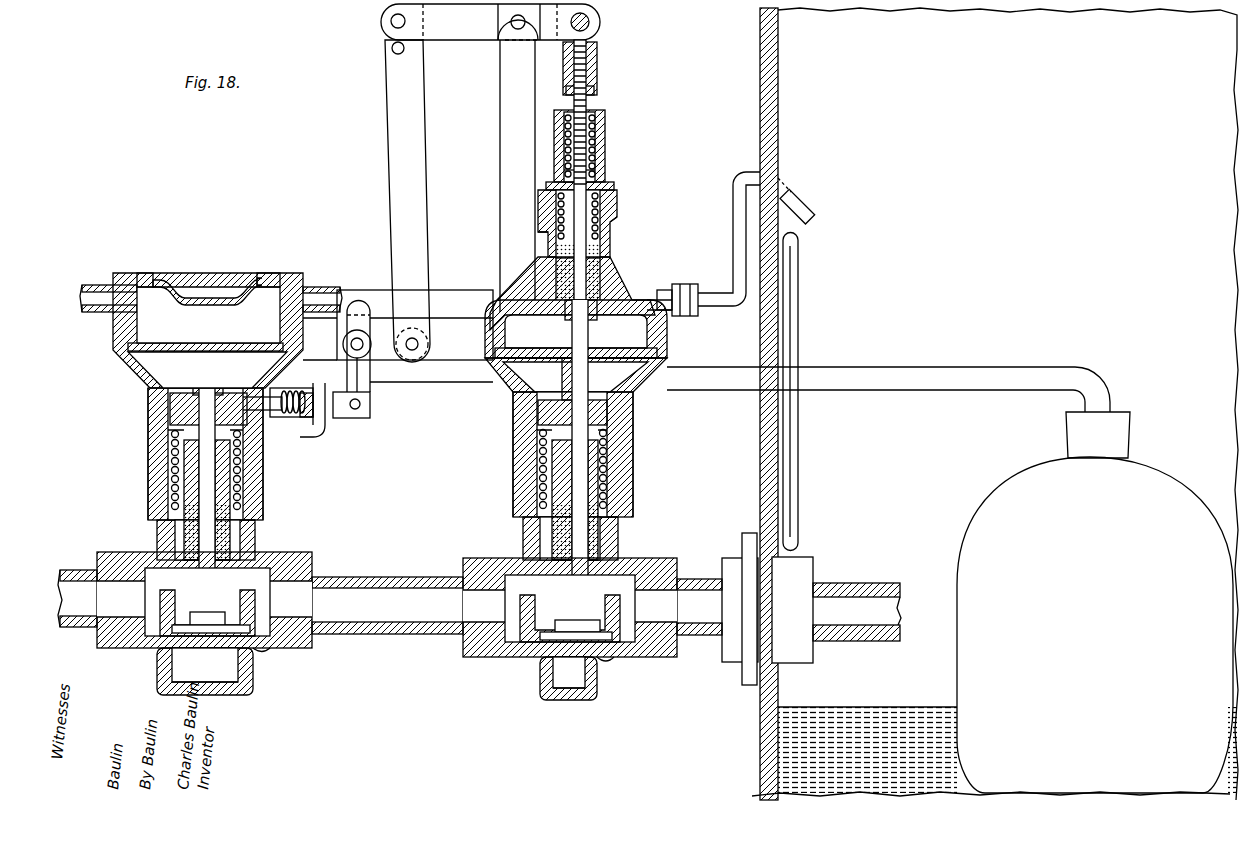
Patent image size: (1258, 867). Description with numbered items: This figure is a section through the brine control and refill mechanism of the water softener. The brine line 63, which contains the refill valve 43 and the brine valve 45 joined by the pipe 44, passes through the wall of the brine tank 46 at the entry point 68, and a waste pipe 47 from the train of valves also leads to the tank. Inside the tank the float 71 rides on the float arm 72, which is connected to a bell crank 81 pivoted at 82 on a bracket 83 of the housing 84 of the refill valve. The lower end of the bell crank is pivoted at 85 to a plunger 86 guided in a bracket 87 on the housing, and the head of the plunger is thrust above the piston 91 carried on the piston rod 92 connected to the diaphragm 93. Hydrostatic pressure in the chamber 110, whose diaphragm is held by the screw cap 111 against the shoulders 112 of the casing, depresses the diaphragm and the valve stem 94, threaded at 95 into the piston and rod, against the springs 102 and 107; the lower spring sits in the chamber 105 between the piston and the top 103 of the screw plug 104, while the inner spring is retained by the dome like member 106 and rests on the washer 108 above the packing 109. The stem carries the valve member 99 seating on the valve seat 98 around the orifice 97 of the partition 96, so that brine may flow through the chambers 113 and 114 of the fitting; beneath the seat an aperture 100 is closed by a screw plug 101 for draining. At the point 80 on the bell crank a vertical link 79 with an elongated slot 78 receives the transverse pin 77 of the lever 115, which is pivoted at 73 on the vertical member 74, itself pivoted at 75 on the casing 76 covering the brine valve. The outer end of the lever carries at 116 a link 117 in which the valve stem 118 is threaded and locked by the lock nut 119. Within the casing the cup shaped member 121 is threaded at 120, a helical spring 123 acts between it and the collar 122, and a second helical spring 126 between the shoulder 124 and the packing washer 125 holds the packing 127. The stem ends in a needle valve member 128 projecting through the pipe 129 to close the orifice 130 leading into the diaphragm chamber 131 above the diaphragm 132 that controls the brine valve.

The refill valve 43 is at (264, 521).
The pipe connecting refill valve to brine valve 44 is at (360, 298).
The brine valve 45 is at (619, 546).
The brine tank 46 is at (760, 68).
The waste pipe 47 is at (807, 214).
The brine line 63 is at (396, 577).
The brine line entry 68 is at (806, 562).
The float 71 is at (1027, 472).
The float arm 72 is at (963, 372).
The pivot of lever 73 is at (515, 30).
The vertical member 74 is at (500, 88).
The pivot of vertical member 75 is at (502, 305).
The casing 76 is at (668, 346).
The transverse pin 77 is at (391, 21).
The elongated slot 78 is at (392, 50).
The vertical link 79 is at (386, 115).
The connection point of vertical link 80 is at (414, 359).
The bell crank 81 is at (371, 326).
The pivot of bell crank 82 is at (362, 360).
The bracket 83 is at (343, 344).
The housing 84 is at (113, 335).
The pivotal connection of plunger 85 is at (361, 406).
The plunger 86 is at (356, 421).
The bracket 87 is at (300, 420).
The piston 91 is at (148, 415).
The piston rod 92 is at (193, 366).
The diaphragm 93 is at (172, 343).
The valve stem 94 is at (264, 528).
The threaded connection 95 is at (170, 406).
The partition 96 is at (248, 628).
The orifice 97 is at (216, 608).
The valve seat 98 is at (158, 640).
The valve member 99 is at (242, 690).
The aperture 100 is at (262, 655).
The screw plug 101 is at (236, 678).
The helical spring 102 is at (226, 472).
The top of screw plug 103 is at (170, 468).
The screw plug 104 is at (256, 540).
The chamber 105 is at (241, 458).
The dome like member 106 is at (180, 491).
The spring 107 is at (231, 482).
The washer 108 is at (186, 516).
The packing 109 is at (196, 531).
The chamber 110 is at (226, 298).
The screw cap 111 is at (286, 287).
The shoulders 112 is at (652, 382).
The chamber 113 is at (145, 598).
The chamber 114 is at (270, 598).
The lever 115 is at (466, 28).
The pivot of link 116 is at (590, 22).
The link 117 is at (598, 56).
The valve stem 118 is at (587, 101).
The lock nut 119 is at (596, 90).
The threaded connection 120 is at (614, 200).
The cup shaped member 121 is at (606, 143).
The collar 122 is at (598, 170).
The helical spring 123 is at (597, 131).
The shoulder 124 is at (613, 186).
The packing washer 125 is at (609, 229).
The second helical spring 126 is at (600, 213).
The packing 127 is at (599, 251).
The needle valve member 128 is at (593, 280).
The pipe 129 is at (655, 302).
The orifice 130 is at (579, 318).
The diaphragm chamber 131 is at (674, 288).
The diaphragm 132 is at (576, 339).